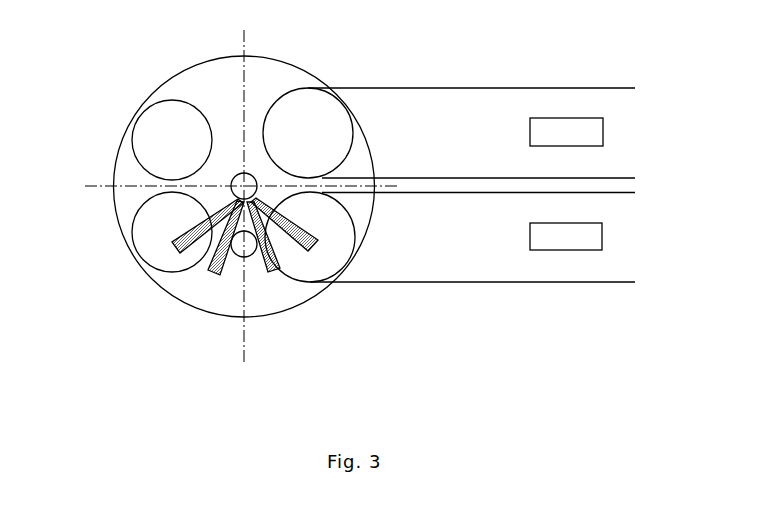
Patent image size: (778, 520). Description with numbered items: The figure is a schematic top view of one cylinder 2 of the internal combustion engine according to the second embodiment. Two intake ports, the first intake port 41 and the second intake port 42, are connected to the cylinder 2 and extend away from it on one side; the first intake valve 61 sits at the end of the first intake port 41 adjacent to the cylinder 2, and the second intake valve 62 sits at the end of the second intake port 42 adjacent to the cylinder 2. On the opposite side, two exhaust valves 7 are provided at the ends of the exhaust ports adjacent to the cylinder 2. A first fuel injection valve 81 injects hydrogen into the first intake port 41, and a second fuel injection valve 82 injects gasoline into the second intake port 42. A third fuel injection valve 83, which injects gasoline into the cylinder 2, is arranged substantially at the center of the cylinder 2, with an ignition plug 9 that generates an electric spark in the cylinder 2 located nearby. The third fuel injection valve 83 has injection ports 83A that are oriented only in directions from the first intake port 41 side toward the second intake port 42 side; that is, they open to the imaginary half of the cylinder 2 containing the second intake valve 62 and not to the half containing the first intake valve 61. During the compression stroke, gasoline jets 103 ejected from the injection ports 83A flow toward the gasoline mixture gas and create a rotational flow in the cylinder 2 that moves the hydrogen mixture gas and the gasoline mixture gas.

The cylinder 2 is at (203, 75).
The exhaust valve 7 is at (158, 117).
The ignition plug 9 is at (236, 256).
The first intake port 41 is at (400, 102).
The second intake port 42 is at (400, 270).
The first intake valve 61 is at (315, 100).
The second intake valve 62 is at (317, 270).
The first fuel injection valve 81 is at (557, 127).
The second fuel injection valve 82 is at (557, 242).
The third fuel injection valve 83 is at (233, 178).
The injection ports 83A is at (237, 199).
The gasoline jets 103 is at (209, 271).